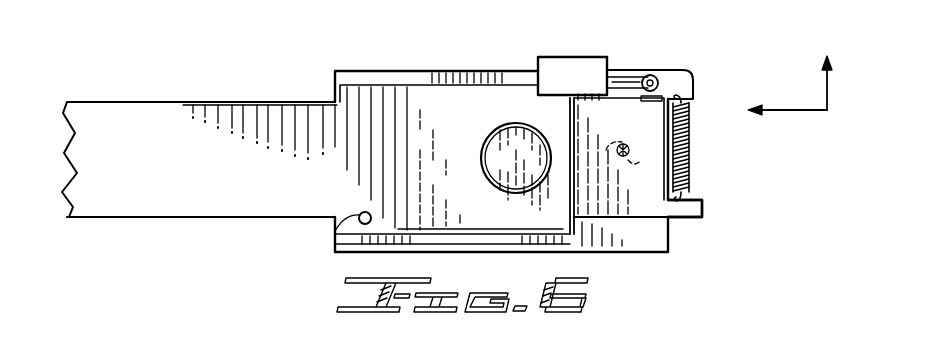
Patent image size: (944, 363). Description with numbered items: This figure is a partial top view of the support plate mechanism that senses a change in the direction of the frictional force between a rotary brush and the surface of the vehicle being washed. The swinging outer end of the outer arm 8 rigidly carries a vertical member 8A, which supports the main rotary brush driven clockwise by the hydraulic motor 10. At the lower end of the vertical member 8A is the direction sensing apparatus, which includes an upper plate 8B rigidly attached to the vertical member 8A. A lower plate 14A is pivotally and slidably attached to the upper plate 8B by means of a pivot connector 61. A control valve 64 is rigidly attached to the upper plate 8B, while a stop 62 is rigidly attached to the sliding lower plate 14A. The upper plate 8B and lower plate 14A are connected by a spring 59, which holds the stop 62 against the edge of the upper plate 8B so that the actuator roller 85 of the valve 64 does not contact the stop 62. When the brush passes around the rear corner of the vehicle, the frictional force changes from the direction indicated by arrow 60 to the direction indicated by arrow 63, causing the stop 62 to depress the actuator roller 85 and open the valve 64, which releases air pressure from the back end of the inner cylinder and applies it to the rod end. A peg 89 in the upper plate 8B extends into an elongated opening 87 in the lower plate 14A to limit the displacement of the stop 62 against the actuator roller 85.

The outer arm 8 is at (139, 112).
The vertical member 8A is at (427, 84).
The upper plate 8B is at (469, 72).
The hydraulic motor 10 is at (483, 170).
The pivot connector 61 is at (335, 231).
The control valve 64 is at (596, 56).
The actuator roller 85 is at (651, 74).
The stop 62 is at (654, 102).
The spring 59 is at (692, 146).
The elongated opening 87 is at (638, 150).
The peg 89 is at (614, 152).
The lower plate 14A is at (676, 228).
The arrow indicating initial frictional force direction 60 is at (808, 112).
The arrow indicating reversed frictional force direction 63 is at (829, 88).